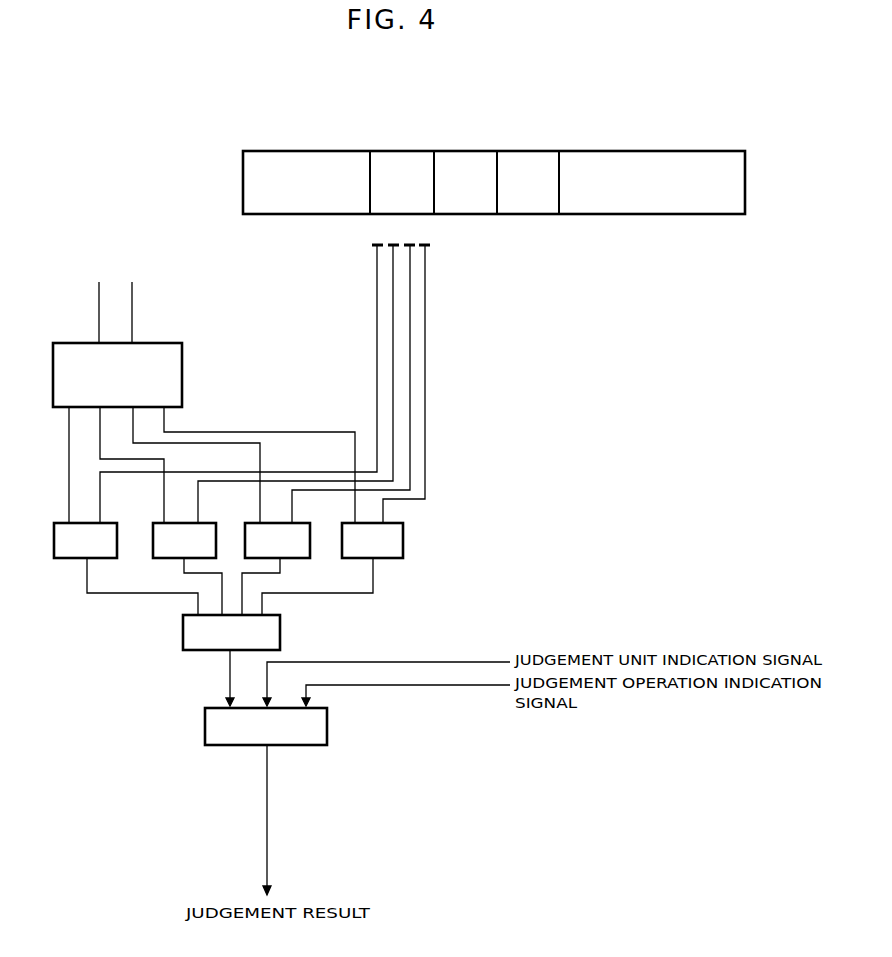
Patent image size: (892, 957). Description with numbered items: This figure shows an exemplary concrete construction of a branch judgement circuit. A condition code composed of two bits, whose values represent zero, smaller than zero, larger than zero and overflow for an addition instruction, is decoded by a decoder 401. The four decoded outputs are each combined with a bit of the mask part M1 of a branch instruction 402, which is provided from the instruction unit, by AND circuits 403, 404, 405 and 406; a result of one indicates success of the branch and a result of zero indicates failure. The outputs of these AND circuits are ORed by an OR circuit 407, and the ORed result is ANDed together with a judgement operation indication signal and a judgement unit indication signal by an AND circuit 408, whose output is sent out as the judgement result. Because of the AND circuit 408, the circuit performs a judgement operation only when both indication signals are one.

The decoder 401 is at (183, 370).
The branch instruction 402 is at (698, 147).
The AND circuit 403 is at (70, 560).
The AND circuit 404 is at (166, 560).
The AND circuit 405 is at (290, 558).
The AND circuit 406 is at (404, 535).
The OR circuit 407 is at (281, 632).
The AND circuit 408 is at (328, 720).